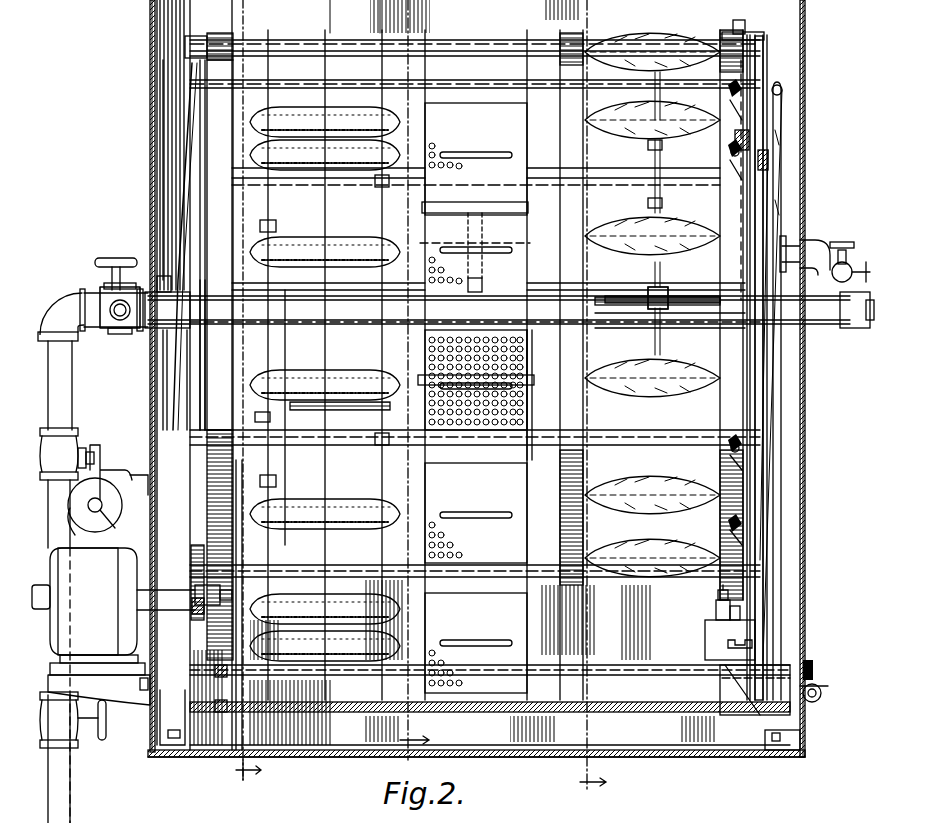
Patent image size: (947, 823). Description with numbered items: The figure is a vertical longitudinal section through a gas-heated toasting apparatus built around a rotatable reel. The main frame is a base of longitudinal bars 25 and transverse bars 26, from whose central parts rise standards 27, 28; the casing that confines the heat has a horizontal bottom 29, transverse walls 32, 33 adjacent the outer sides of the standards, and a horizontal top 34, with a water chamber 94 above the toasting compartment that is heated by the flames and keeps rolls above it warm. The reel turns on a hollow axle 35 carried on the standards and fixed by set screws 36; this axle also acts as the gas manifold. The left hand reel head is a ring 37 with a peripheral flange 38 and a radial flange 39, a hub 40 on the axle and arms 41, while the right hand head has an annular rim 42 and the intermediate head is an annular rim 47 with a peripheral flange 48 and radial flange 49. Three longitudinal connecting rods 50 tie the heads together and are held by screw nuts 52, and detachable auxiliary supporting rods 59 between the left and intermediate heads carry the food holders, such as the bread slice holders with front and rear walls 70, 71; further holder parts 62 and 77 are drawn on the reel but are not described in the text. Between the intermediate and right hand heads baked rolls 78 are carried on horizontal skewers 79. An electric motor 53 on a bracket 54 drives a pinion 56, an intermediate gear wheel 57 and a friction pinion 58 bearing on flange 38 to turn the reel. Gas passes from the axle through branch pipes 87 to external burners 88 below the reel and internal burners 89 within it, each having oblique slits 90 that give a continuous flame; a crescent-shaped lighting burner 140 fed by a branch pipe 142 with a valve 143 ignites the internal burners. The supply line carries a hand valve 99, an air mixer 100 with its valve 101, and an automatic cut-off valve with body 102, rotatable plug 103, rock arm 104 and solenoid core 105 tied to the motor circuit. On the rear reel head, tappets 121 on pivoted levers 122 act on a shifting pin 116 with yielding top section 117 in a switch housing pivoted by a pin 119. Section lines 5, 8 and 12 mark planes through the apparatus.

The section line 5 is at (248, 787).
The section line 8 is at (414, 761).
The section line 12 is at (591, 800).
The longitudinal bars 25 is at (490, 730).
The transverse bars 26 is at (765, 733).
The standard 27 is at (176, 717).
The standard 28 is at (776, 375).
The bottom 29 is at (476, 774).
The transverse wall 32 is at (152, 184).
The transverse wall 33 is at (806, 100).
The top 34 is at (404, 16).
The hollow axle 35 is at (620, 328).
The set screws 36 is at (165, 275).
The ring 37 is at (222, 33).
The peripheral flange 38 is at (222, 370).
The radial flange 39 is at (207, 498).
The hub 40 is at (160, 278).
The arms 41 is at (188, 128).
The annular rim 42 is at (746, 34).
The annular rim 47 is at (560, 545).
The peripheral flange 48 is at (548, 362).
The radial flange 49 is at (560, 405).
The connecting rods 50 is at (345, 41).
The screw nuts 52 is at (185, 45).
The electric motor 53 is at (113, 685).
The bracket 54 is at (99, 687).
The driving pinion 56 is at (205, 612).
The gear wheel 57 is at (204, 636).
The friction pinion 58 is at (232, 594).
The auxiliary supporting rods 59 is at (375, 182).
The rod clamp 62 is at (270, 230).
The front wall 70 is at (476, 398).
The rear wall 71 is at (238, 470).
The plate 77 is at (505, 423).
The baked rolls 78 is at (632, 145).
The skewers 79 is at (718, 360).
The branch pipes 87 is at (668, 292).
The external burners 88 is at (530, 208).
The internal burners 89 is at (725, 705).
The slits 90 is at (690, 306).
The water chamber 94 is at (652, 35).
The hand operating valve 99 is at (64, 720).
The air mixer 100 is at (128, 333).
The valve 101 is at (108, 262).
The valve body 102 is at (58, 450).
The rotatable plug 103 is at (90, 452).
The rock arm 104 is at (112, 472).
The solenoid core 105 is at (114, 526).
The shifting pin 116 is at (705, 632).
The top section 117 is at (716, 612).
The pin 119 is at (728, 645).
The tappets 121 is at (718, 598).
The lever 122 is at (735, 170).
The lighting burner 140 is at (782, 138).
The branch pipe 142 is at (805, 242).
The valve 143 is at (846, 262).